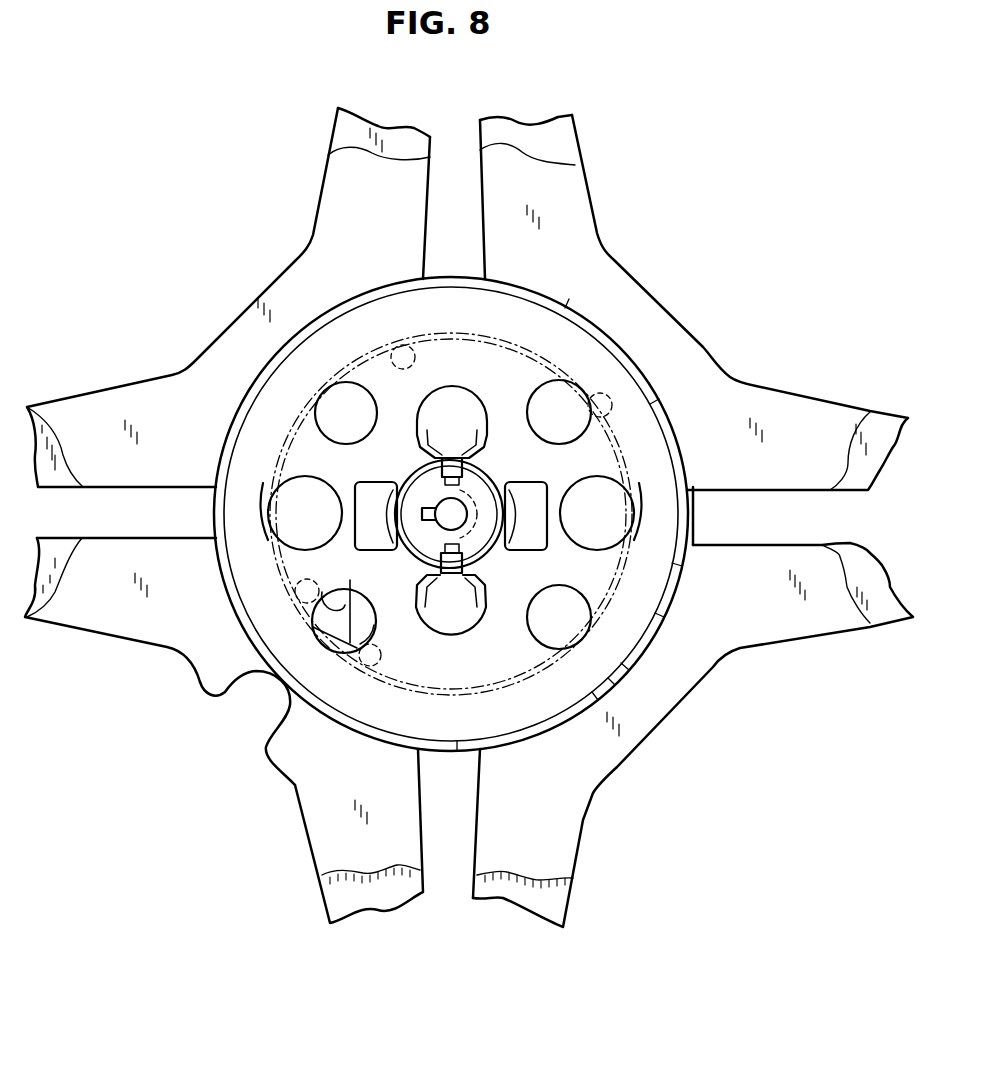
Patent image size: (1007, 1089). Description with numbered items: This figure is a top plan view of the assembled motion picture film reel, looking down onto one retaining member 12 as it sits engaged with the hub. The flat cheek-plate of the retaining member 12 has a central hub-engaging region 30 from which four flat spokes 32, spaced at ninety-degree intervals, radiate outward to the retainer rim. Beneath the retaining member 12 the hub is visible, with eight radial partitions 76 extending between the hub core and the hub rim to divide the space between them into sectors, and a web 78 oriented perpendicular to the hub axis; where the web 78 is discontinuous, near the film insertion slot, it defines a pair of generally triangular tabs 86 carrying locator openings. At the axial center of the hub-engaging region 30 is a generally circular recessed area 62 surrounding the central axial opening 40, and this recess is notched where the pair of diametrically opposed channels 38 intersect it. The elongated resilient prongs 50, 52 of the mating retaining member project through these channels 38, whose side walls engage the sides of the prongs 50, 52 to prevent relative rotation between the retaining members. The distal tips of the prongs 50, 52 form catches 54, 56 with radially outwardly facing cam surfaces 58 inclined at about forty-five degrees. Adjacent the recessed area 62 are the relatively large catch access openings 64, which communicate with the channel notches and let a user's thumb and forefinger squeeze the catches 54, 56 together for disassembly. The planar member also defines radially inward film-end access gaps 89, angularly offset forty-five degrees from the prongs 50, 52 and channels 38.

The retaining member 12 is at (712, 343).
The hub-engaging region 30 is at (385, 388).
The spoke 32 is at (342, 190).
The channel 38 is at (420, 492).
The central axial opening 40 is at (460, 522).
The prong 50 is at (440, 556).
The prong 52 is at (438, 482).
The catch 54 is at (460, 582).
The catch 56 is at (483, 462).
The cam surface 58 is at (453, 458).
The recessed area 62 is at (478, 494).
The catch access opening 64 is at (475, 398).
The radial partition 76 is at (434, 392).
The web 78 is at (607, 538).
The tab 86 is at (345, 605).
The film-end access gap 89 is at (229, 694).